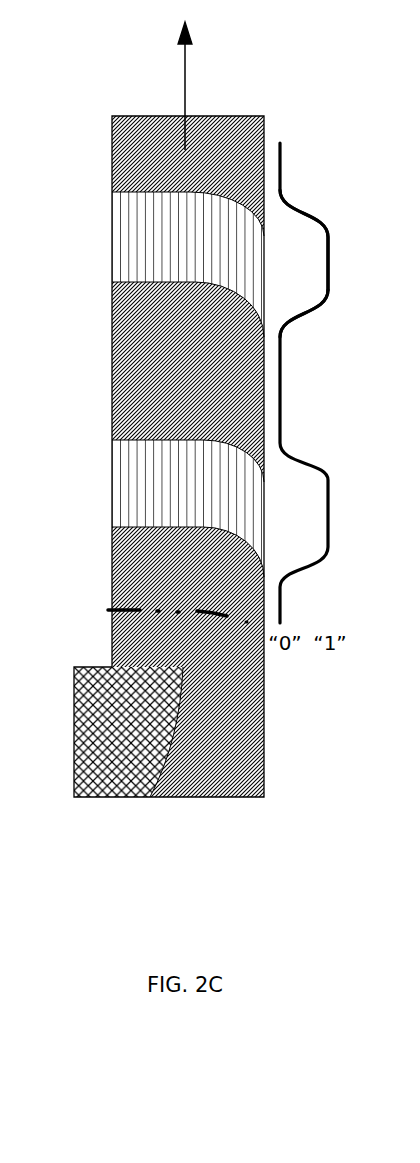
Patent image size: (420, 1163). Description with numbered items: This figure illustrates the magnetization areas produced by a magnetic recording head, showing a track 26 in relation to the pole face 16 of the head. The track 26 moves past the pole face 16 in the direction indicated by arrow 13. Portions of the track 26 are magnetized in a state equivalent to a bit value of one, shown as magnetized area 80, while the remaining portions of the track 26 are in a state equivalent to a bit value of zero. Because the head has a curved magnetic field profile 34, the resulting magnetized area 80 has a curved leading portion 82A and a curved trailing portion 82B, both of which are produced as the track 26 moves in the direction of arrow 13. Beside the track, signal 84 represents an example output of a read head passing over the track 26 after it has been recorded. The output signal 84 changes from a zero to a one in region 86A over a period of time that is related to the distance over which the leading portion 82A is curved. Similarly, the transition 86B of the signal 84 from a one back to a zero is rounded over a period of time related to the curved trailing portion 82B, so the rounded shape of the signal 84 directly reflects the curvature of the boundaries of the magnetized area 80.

The arrow 13 is at (183, 67).
The pole face 16 is at (112, 797).
The track 26 is at (197, 787).
The curved magnetic field profile 34 is at (113, 605).
The magnetized area 80 is at (137, 225).
The curved leading portion 82A is at (227, 200).
The curved trailing portion 82B is at (112, 295).
The signal 84 is at (319, 114).
The region 86A is at (317, 210).
The transition 86B is at (305, 312).